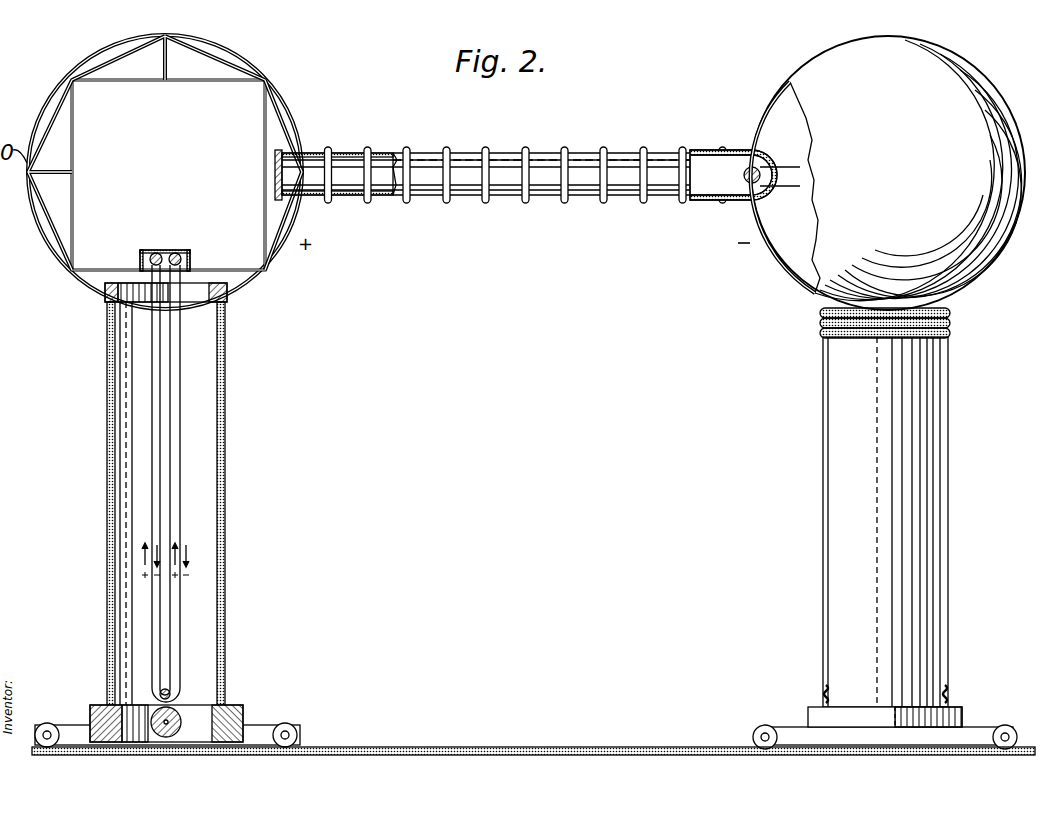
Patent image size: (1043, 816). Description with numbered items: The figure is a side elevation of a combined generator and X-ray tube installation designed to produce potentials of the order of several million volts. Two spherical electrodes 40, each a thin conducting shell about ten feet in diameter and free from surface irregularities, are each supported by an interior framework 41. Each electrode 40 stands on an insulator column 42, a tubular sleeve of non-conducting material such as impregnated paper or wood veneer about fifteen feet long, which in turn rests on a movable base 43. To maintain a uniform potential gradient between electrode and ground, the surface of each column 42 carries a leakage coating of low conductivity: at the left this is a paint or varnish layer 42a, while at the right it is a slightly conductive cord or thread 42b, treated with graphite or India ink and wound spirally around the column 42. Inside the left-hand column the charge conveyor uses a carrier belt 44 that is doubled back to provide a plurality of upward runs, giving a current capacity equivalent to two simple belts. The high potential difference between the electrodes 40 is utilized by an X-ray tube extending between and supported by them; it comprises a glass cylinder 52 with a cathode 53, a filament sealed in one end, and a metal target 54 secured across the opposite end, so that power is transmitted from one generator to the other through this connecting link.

The spherical electrode 40 is at (888, 177).
The interior framework 41 is at (48, 212).
The insulator column 42 is at (226, 432).
The paint or varnish layer 42a is at (226, 352).
The cord or thread 42b is at (822, 336).
The movable base 43 is at (312, 718).
The carrier belt 44 is at (212, 671).
The glass cylinder 52 is at (625, 200).
The cathode 53 is at (752, 190).
The metal target 54 is at (275, 178).